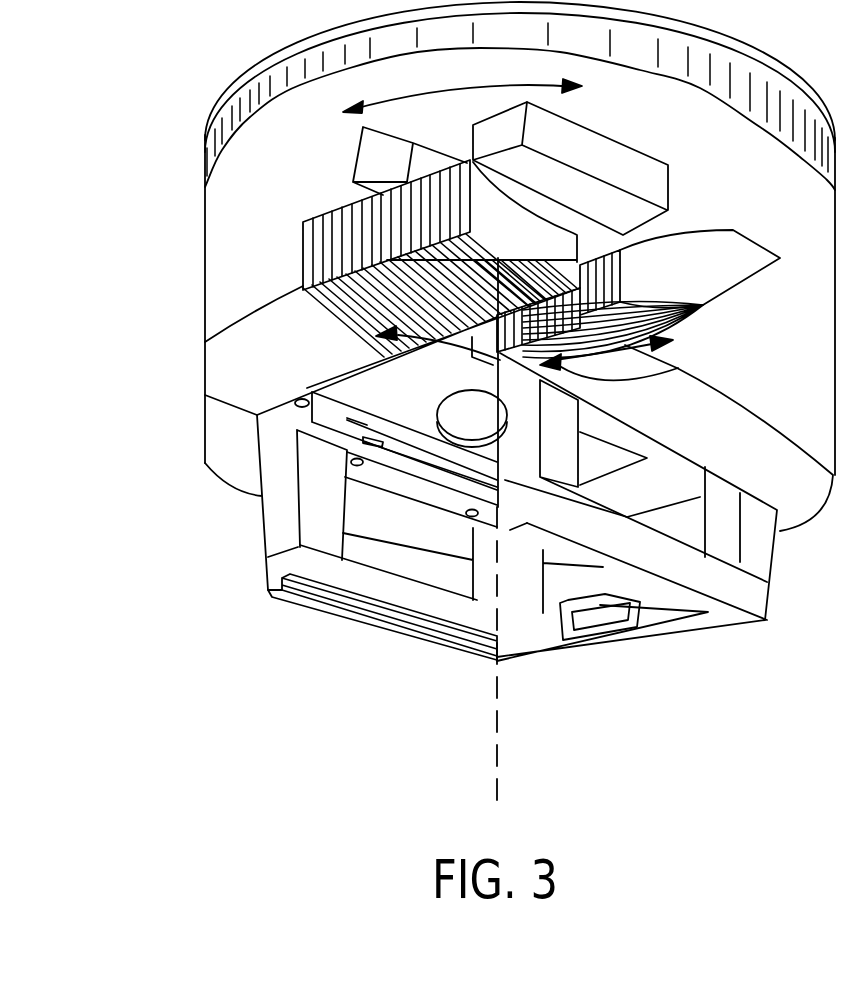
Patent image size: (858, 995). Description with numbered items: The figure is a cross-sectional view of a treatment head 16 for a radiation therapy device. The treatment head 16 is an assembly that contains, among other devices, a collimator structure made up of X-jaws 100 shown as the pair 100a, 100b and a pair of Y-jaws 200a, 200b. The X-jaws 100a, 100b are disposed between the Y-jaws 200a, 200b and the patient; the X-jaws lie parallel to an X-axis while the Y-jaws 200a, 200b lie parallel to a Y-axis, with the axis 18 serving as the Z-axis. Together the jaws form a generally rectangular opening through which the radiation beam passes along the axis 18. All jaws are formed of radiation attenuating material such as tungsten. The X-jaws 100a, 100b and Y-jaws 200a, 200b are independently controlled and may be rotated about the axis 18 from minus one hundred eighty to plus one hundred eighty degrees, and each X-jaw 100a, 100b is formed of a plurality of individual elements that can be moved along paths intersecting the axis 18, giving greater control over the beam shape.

The treatment head 16 is at (230, 216).
The axis 18 is at (495, 728).
The X-jaws 100 is at (730, 258).
The X-jaw 100a is at (546, 252).
The X-jaw 100b is at (705, 296).
The Y-jaw 200a is at (585, 145).
The Y-jaw 200b is at (385, 158).